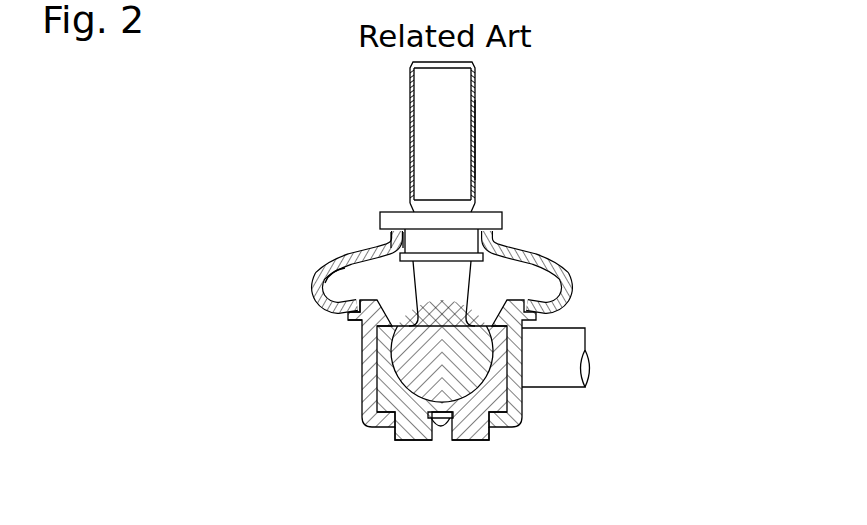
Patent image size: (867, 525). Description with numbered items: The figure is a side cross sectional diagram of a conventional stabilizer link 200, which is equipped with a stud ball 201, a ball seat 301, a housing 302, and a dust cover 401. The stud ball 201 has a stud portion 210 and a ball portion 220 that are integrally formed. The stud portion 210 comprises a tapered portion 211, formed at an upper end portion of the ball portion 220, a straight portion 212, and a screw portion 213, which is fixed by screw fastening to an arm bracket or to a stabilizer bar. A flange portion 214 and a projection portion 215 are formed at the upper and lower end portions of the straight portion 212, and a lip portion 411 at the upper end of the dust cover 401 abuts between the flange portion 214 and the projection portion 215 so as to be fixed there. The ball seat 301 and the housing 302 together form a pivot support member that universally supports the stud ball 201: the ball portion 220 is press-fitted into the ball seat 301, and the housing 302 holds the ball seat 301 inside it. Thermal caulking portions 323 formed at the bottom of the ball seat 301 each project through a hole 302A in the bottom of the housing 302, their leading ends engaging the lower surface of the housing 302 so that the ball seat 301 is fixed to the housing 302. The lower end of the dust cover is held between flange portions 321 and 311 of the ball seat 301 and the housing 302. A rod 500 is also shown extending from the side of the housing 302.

The stabilizer link 200 is at (610, 110).
The stud ball 201 is at (477, 146).
The stud portion 210 is at (422, 133).
The tapered portion 211 is at (455, 285).
The straight portion 212 is at (457, 243).
The screw portion 213 is at (472, 93).
The flange portion 214 is at (490, 222).
The projection portion 215 is at (490, 260).
The ball portion 220 is at (462, 407).
The ball seat 301 is at (488, 397).
The housing 302 is at (368, 390).
The hole 302A is at (393, 438).
The flange portion 311 is at (347, 323).
The flange portion 321 is at (330, 275).
The thermal caulking portion 323 is at (430, 435).
The dust cover 401 is at (360, 253).
The lip portion 411 is at (388, 237).
The rod 500 is at (570, 372).